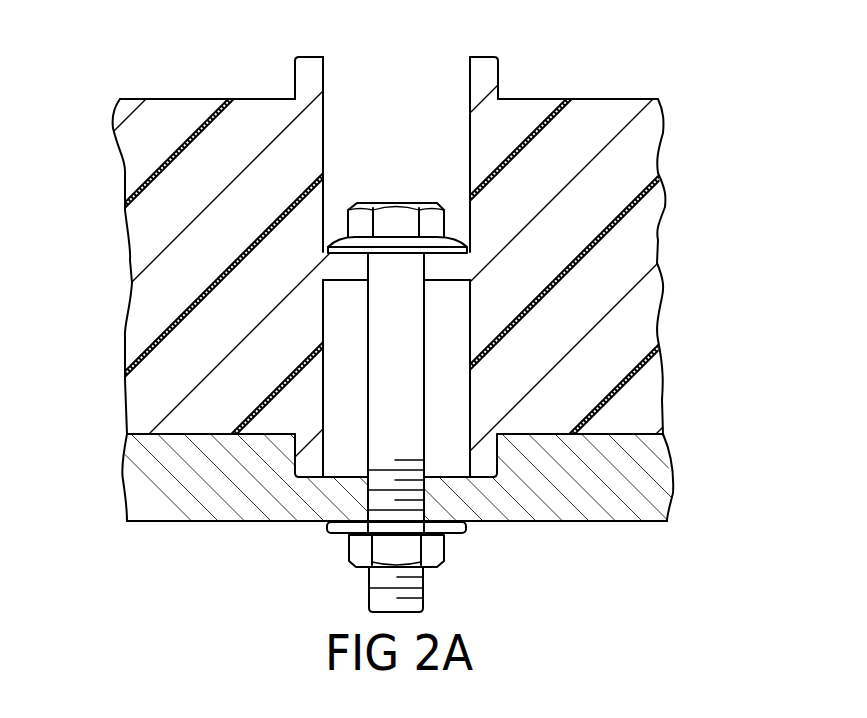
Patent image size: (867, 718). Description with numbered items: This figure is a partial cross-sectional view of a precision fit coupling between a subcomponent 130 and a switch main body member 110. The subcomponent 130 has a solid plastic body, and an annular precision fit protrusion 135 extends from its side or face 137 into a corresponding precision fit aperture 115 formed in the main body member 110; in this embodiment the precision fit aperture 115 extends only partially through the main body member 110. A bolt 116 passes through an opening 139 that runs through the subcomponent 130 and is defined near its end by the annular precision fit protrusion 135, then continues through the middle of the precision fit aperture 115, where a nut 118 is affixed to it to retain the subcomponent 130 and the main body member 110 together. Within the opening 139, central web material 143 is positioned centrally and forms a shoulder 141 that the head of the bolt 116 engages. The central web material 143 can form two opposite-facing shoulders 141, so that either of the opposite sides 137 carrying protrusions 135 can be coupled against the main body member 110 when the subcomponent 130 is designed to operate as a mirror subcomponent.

The main body member 110 is at (133, 467).
The precision fit aperture 115 is at (297, 465).
The bolt 116 is at (377, 577).
The nut 118 is at (435, 551).
The subcomponent 130 is at (643, 323).
The precision fit protrusion 135 is at (482, 70).
The face 137 is at (608, 99).
The opening 139 is at (345, 75).
The shoulder 141 is at (325, 229).
The central web material 143 is at (443, 267).